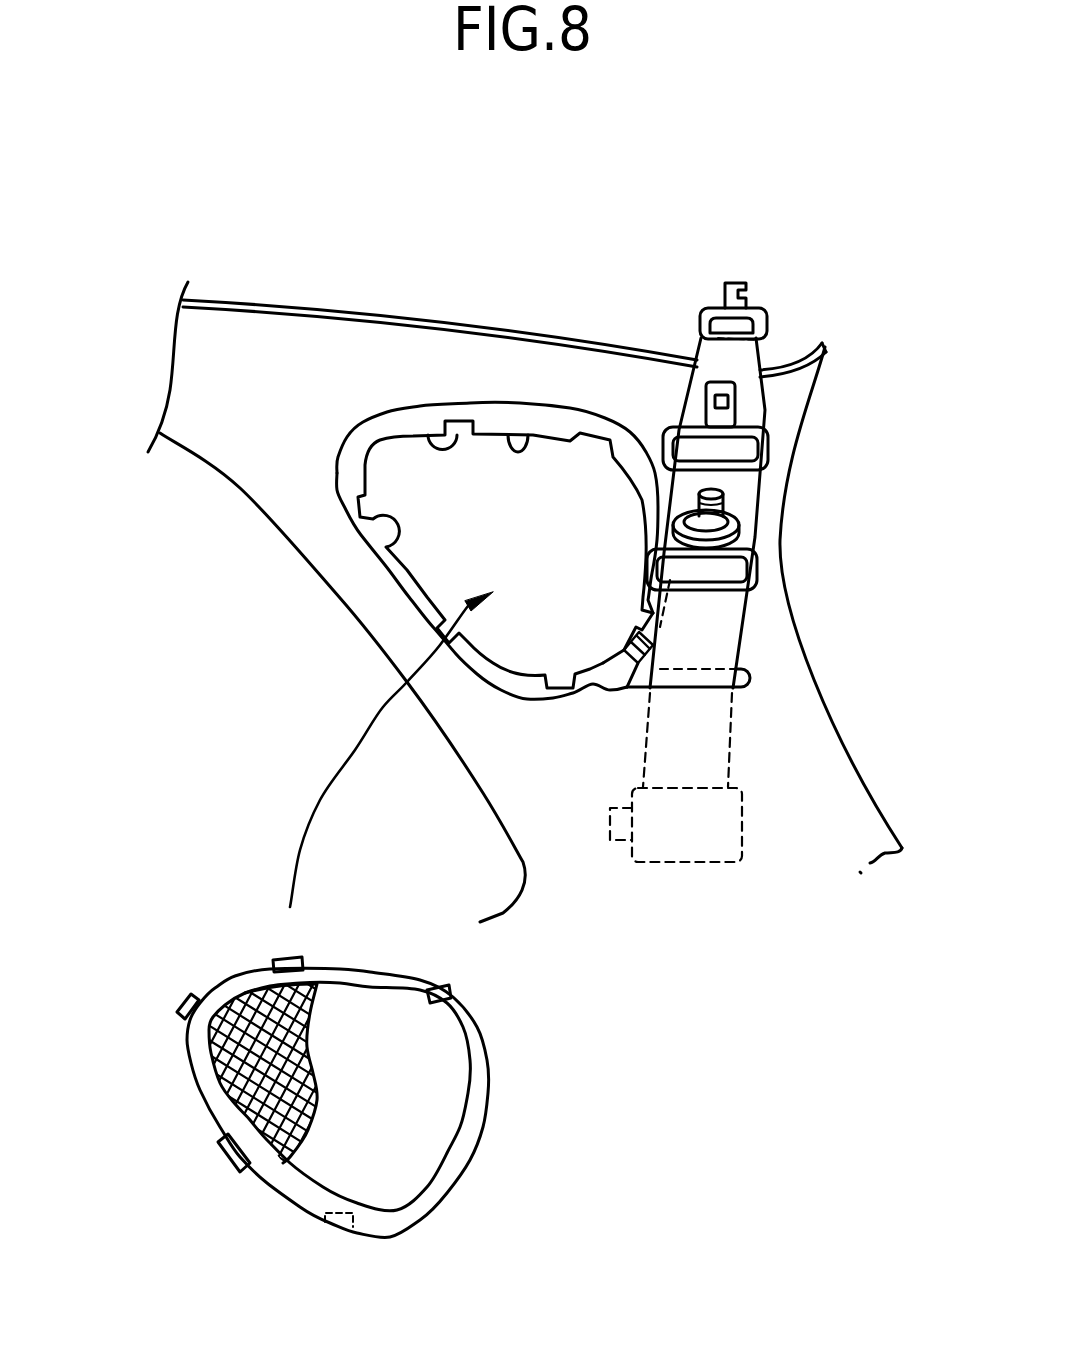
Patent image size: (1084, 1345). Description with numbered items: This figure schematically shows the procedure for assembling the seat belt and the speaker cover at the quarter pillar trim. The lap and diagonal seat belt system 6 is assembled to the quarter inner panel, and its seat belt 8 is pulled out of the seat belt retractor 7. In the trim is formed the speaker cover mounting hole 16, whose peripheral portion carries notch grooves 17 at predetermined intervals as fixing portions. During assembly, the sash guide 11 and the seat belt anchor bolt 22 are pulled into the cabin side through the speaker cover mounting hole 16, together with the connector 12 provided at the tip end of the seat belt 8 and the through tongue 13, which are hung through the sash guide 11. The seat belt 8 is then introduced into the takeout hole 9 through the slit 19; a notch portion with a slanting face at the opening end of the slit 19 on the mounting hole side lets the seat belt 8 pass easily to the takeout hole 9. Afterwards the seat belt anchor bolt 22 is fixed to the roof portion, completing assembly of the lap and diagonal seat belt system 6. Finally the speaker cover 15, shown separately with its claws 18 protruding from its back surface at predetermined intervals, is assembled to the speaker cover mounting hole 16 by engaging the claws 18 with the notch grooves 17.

The lap and diagonal seat belt system 6 is at (775, 314).
The seat belt retractor 7 is at (745, 823).
The seat belt 8 is at (722, 622).
The takeout hole 9 is at (752, 679).
The sash guide 11 is at (760, 573).
The connector 12 is at (738, 283).
The through tongue 13 is at (730, 415).
The speaker cover 15 is at (483, 1108).
The speaker cover mounting hole 16 is at (528, 435).
The notch grooves 17 is at (432, 435).
The claws 18 is at (183, 1003).
The slit 19 is at (618, 668).
The seat belt anchor bolt 22 is at (732, 503).